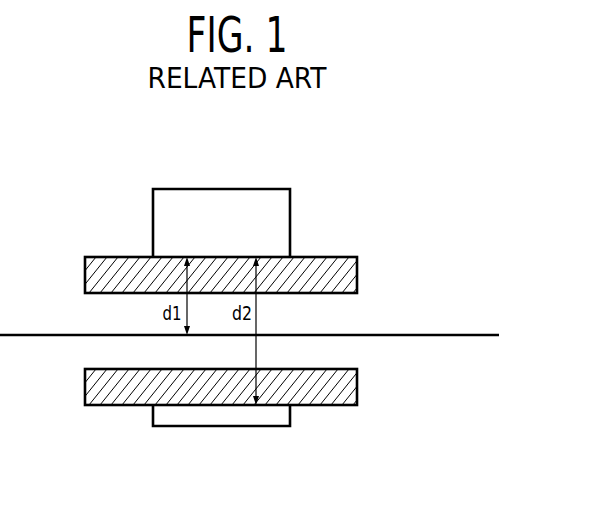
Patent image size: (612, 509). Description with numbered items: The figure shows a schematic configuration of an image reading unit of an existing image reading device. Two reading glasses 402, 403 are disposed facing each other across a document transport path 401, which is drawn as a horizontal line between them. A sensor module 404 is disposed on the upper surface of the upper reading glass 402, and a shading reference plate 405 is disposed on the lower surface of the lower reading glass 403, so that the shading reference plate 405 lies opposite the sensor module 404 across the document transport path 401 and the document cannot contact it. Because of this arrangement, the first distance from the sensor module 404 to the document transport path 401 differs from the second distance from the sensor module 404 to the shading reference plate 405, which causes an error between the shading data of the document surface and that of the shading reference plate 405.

The document transport path 401 is at (467, 334).
The upper reading glass 402 is at (327, 257).
The lower reading glass 403 is at (325, 407).
The sensor module 404 is at (257, 189).
The shading reference plate 405 is at (257, 427).